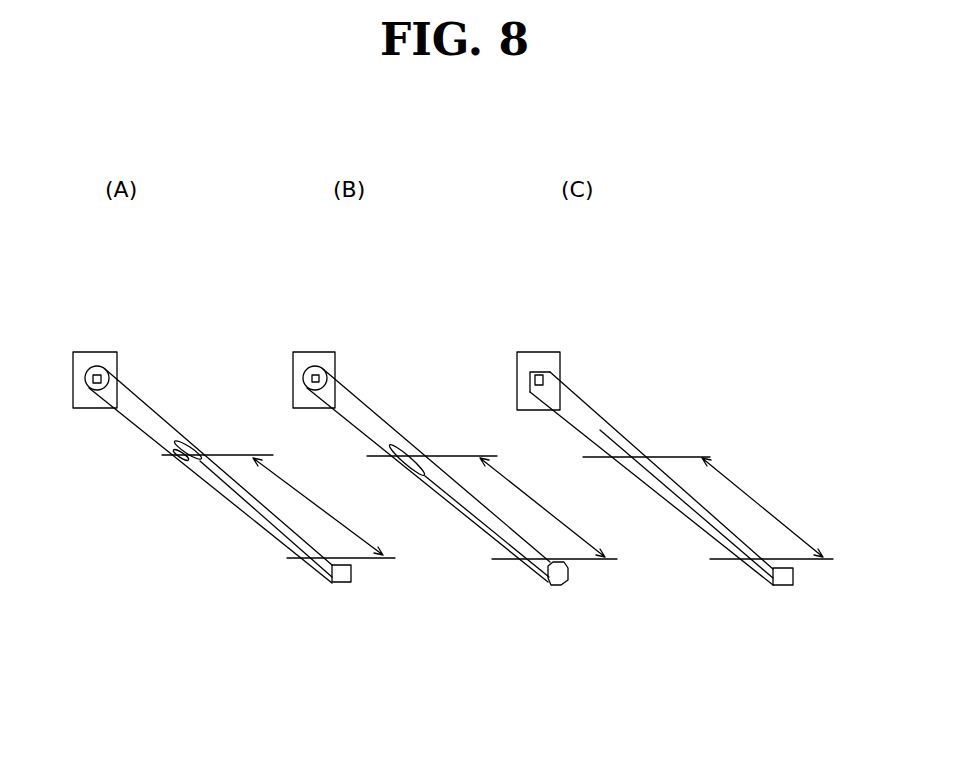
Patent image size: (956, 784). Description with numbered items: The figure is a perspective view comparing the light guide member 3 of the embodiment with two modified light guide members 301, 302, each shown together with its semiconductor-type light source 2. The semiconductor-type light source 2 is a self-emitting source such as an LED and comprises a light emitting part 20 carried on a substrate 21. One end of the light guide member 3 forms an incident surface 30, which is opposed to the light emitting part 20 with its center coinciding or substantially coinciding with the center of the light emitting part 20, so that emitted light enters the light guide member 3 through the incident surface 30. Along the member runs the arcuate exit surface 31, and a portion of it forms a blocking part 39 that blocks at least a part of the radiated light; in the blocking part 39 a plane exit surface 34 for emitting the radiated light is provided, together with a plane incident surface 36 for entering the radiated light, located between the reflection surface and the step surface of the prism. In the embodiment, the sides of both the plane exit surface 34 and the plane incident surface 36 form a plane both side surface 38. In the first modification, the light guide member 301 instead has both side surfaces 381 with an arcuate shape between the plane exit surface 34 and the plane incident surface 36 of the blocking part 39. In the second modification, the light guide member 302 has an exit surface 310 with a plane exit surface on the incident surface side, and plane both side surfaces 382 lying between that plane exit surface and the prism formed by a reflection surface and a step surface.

The semiconductor-type light source 2 is at (101, 338).
The light guide member 3 is at (136, 382).
The light emitting part 20 is at (100, 390).
The substrate 21 is at (85, 408).
The incident surface 30 is at (88, 368).
The arcuate exit surface 31 is at (157, 427).
The plane exit surface 34 is at (237, 502).
The plane incident surface 36 is at (352, 572).
The plane both side surface 38 is at (223, 472).
The blocking part 39 is at (330, 510).
The light guide member of first modification 301 is at (352, 375).
The light guide member of second modification 302 is at (582, 373).
The exit surface 310 is at (590, 430).
The both side surfaces 381 is at (442, 473).
The plane both side surfaces 382 is at (615, 432).